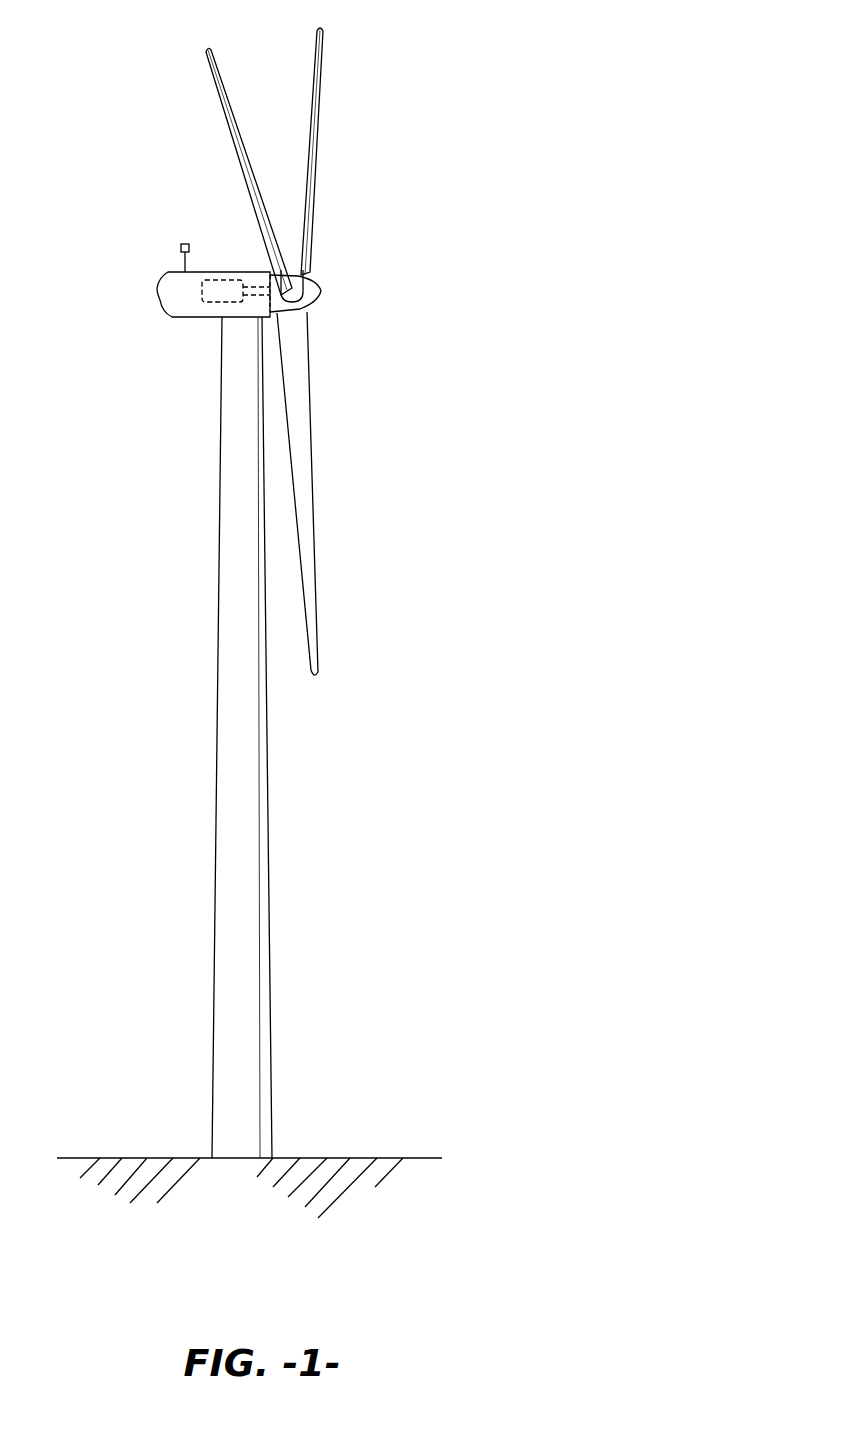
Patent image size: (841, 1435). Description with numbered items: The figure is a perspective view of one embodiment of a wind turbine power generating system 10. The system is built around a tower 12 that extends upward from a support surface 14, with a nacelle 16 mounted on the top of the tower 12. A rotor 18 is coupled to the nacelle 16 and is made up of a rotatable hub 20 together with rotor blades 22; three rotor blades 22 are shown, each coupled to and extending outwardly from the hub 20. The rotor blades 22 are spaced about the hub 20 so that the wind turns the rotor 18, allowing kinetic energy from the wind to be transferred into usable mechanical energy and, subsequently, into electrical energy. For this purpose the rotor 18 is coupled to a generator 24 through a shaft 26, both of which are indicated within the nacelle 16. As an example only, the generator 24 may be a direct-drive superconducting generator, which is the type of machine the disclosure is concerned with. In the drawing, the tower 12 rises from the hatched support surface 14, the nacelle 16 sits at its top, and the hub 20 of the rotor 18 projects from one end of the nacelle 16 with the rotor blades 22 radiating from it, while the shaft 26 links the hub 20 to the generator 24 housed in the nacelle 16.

The wind turbine power generating system 10 is at (432, 130).
The tower 12 is at (227, 855).
The support surface 14 is at (340, 1158).
The nacelle 16 is at (198, 320).
The rotor 18 is at (283, 351).
The rotatable hub 20 is at (320, 297).
The rotor blade 22 is at (232, 128).
The generator 24 is at (202, 290).
The shaft 26 is at (257, 288).